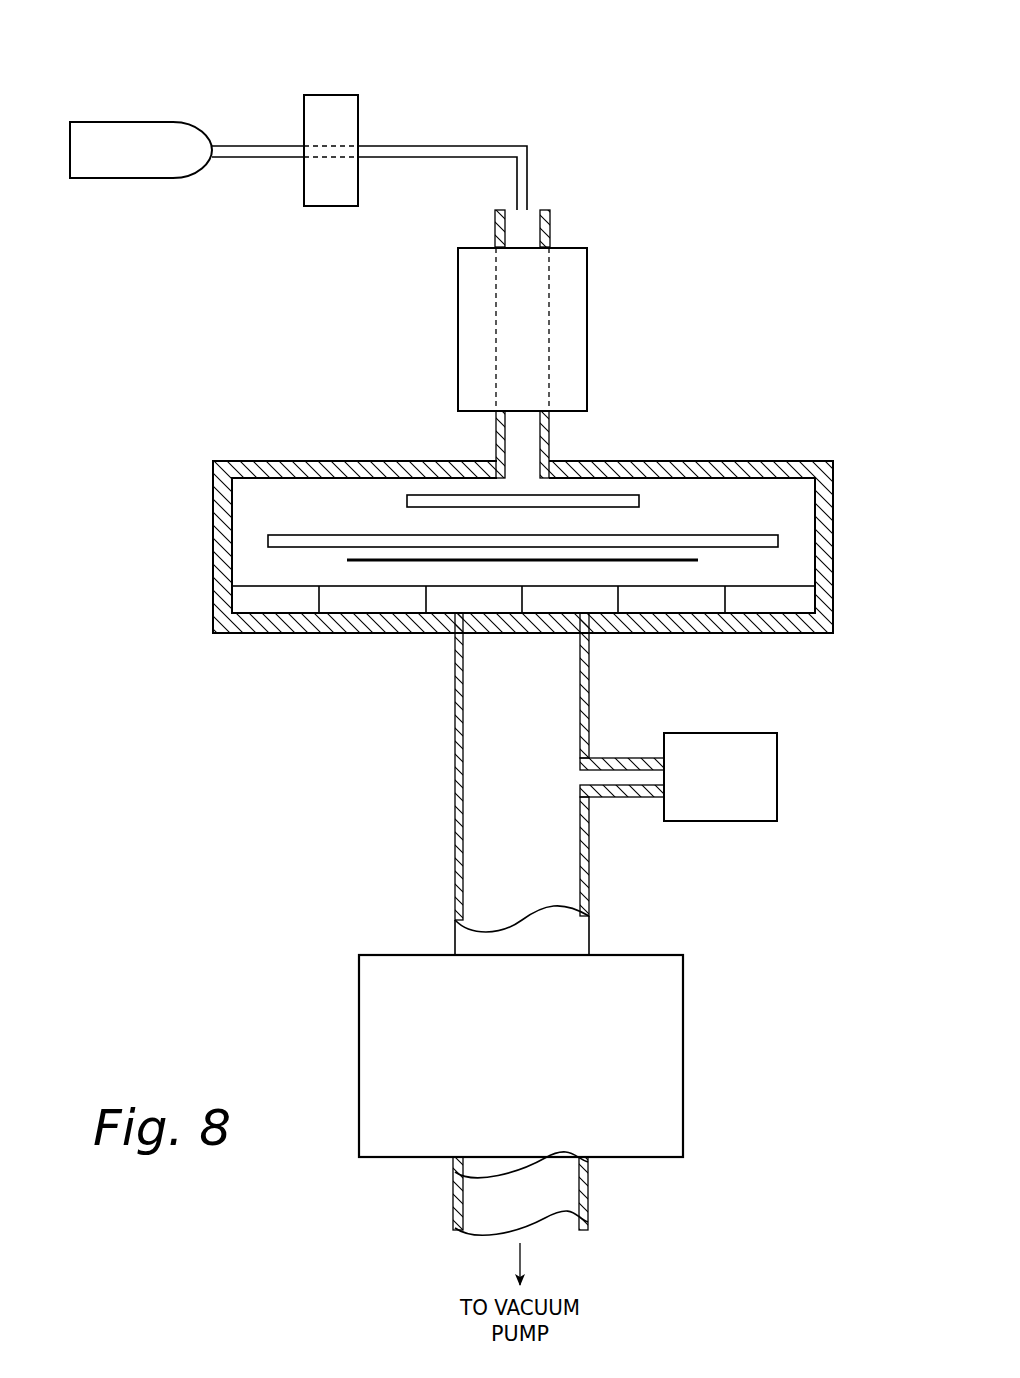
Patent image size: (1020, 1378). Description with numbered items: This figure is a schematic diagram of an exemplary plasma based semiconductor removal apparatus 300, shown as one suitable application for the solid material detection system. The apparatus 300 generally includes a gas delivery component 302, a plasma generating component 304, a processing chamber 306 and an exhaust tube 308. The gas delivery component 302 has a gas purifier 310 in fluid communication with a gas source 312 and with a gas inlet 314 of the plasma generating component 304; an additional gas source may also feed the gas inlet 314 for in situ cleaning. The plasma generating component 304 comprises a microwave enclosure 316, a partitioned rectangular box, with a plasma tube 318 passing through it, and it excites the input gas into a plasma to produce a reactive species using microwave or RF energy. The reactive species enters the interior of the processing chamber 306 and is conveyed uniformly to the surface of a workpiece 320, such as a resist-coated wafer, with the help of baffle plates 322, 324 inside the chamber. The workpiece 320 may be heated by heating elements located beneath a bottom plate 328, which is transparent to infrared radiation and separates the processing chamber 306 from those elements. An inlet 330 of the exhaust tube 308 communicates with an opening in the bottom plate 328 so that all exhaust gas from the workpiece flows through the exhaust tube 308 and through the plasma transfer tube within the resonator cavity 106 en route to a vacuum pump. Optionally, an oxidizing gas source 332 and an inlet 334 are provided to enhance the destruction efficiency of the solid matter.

The resonator cavity 106 is at (683, 1048).
The plasma based semiconductor removal apparatus 300 is at (793, 135).
The gas delivery component 302 is at (250, 70).
The plasma generating component 304 is at (505, 329).
The processing chamber 306 is at (508, 524).
The exhaust tube 308 is at (522, 784).
The gas purifier 310 is at (358, 122).
The gas source 312 is at (134, 178).
The gas inlet 314 is at (527, 209).
The microwave enclosure 316 is at (458, 325).
The plasma tube 318 is at (550, 228).
The workpiece 320 is at (665, 562).
The baffle plate 322 is at (422, 490).
The baffle plate 324 is at (292, 532).
The bottom plate 328 is at (257, 585).
The inlet 330 is at (527, 628).
The oxidizing gas source 332 is at (777, 775).
The inlet 334 is at (622, 797).